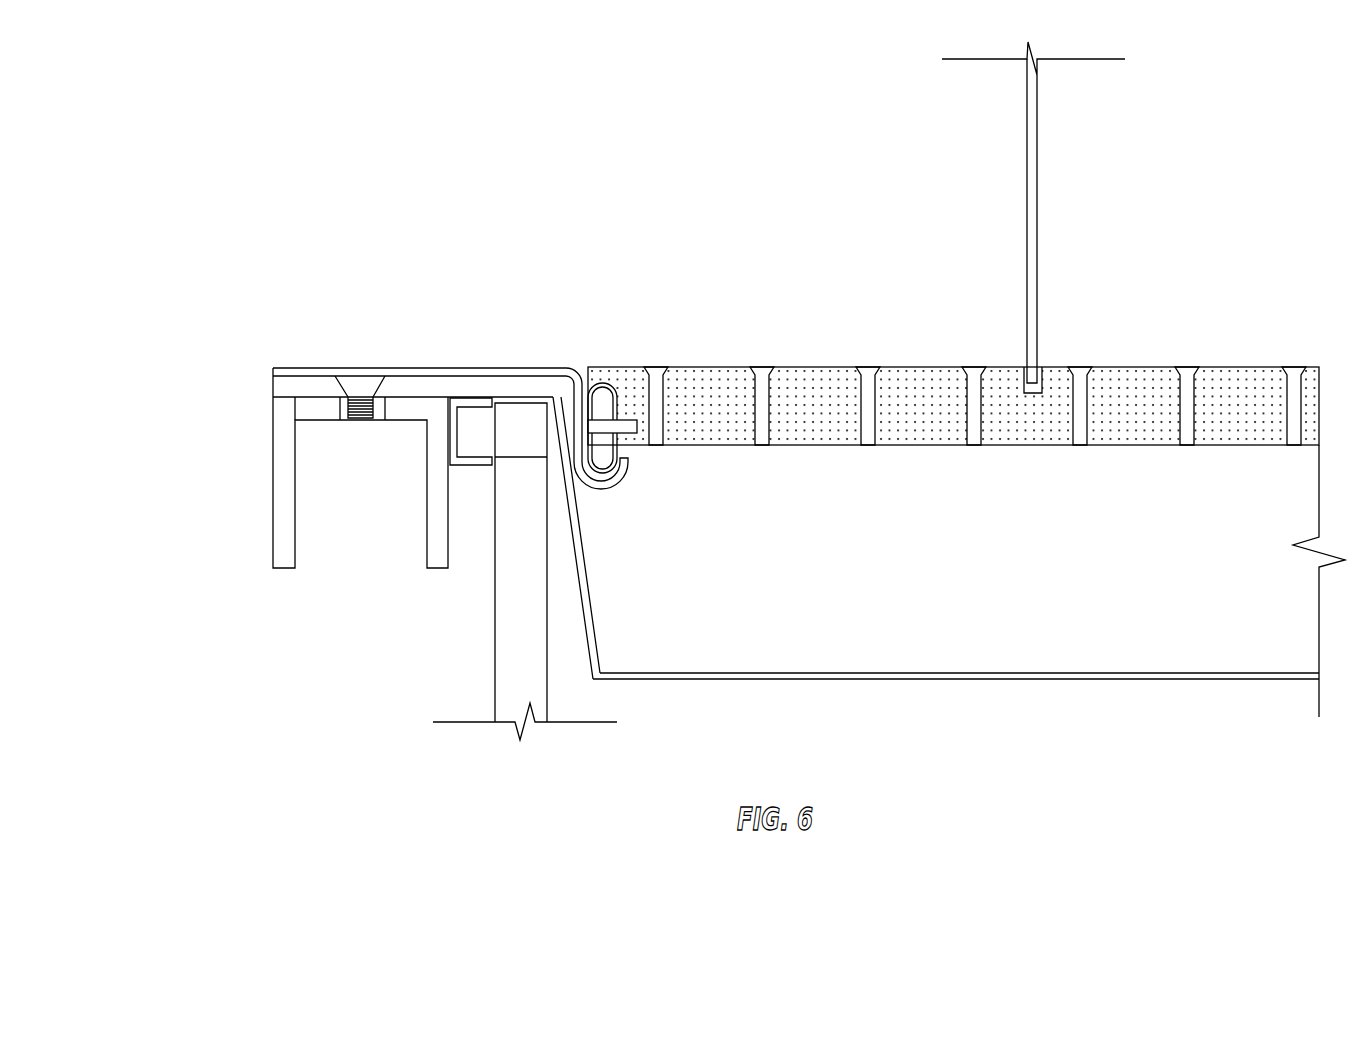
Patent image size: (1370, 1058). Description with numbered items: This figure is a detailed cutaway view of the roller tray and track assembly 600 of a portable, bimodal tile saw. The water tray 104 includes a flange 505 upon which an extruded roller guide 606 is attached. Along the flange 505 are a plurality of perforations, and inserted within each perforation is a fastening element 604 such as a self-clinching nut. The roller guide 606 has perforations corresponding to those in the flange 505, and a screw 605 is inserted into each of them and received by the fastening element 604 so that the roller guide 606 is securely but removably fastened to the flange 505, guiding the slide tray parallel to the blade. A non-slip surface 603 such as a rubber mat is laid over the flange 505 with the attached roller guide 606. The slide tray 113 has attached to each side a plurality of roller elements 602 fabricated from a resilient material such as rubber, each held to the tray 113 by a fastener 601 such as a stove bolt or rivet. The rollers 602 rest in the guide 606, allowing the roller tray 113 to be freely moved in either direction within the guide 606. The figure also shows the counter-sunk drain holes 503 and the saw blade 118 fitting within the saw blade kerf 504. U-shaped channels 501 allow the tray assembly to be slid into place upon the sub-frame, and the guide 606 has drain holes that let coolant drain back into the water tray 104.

The roller tray and track assembly 600 is at (778, 76).
The flange 505 is at (262, 383).
The roller guide 606 is at (285, 382).
The U-shaped channels 501 is at (333, 527).
The fastening element 604 is at (380, 388).
The screw 605 is at (360, 385).
The non-slip surface 603 is at (497, 368).
The roller elements 602 is at (603, 392).
The fastener 601 is at (632, 420).
The slide tray 113 is at (730, 365).
The counter-sunk drain holes 503 is at (760, 372).
The saw blade kerf 504 is at (1042, 362).
The saw blade 118 is at (1040, 212).
The water tray 104 is at (738, 672).